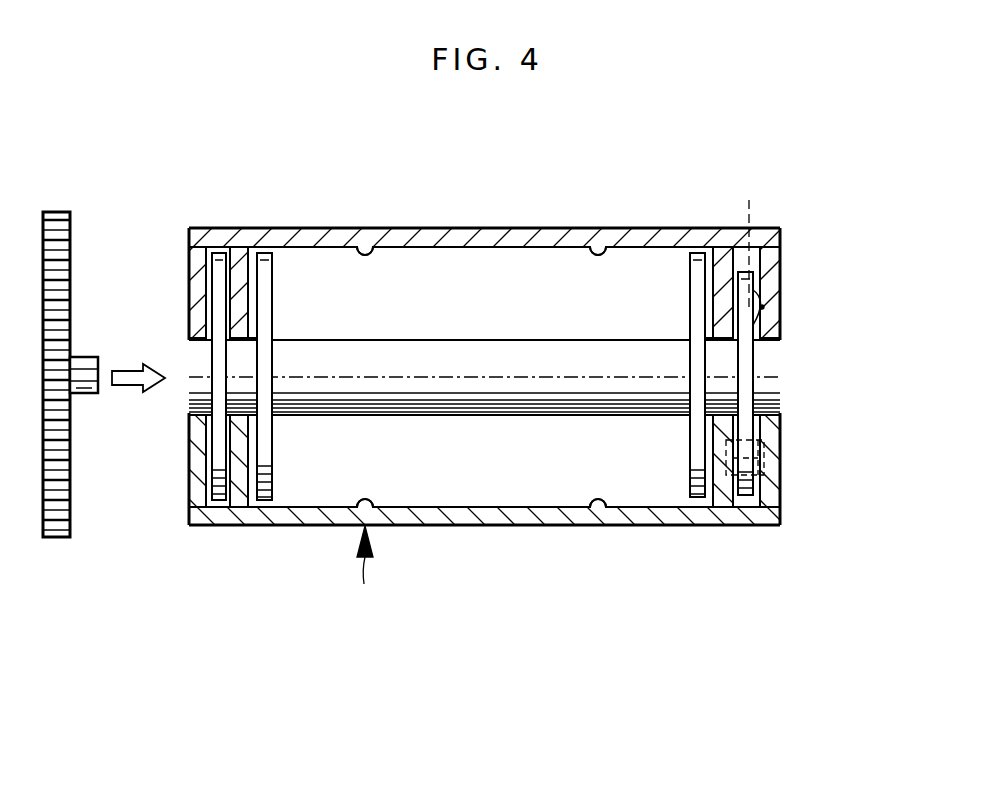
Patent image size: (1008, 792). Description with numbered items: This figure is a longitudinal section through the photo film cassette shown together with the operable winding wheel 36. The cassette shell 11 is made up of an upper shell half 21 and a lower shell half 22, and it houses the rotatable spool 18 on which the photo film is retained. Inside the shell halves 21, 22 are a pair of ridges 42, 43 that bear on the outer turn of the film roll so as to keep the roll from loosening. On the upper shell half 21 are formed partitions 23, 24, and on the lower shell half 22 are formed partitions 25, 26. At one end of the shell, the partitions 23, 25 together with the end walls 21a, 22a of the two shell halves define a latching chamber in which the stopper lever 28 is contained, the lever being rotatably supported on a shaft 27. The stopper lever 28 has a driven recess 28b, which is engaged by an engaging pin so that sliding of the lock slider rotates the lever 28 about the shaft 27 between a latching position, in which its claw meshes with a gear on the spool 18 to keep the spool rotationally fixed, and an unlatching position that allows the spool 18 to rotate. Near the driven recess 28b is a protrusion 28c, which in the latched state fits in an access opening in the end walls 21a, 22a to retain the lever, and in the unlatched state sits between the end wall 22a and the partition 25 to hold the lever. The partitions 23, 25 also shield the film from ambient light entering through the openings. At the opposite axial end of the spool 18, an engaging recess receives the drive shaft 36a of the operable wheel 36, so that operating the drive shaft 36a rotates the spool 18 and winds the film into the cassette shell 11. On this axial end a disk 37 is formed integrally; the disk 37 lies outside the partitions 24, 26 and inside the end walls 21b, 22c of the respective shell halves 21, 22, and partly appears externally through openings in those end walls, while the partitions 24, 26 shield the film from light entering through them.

The cassette shell 11 is at (362, 590).
The spool 18 is at (470, 403).
The upper shell half 21 is at (470, 228).
The end wall 21a is at (772, 306).
The end wall 21b is at (195, 300).
The lower shell half 22 is at (470, 527).
The end wall 22a is at (772, 433).
The end wall 22c is at (200, 432).
The partition 23 is at (698, 281).
The partition 24 is at (240, 298).
The partition 25 is at (712, 455).
The partition 26 is at (245, 463).
The shaft 27 is at (758, 461).
The stopper lever 28 is at (748, 508).
The driven recess 28b is at (762, 241).
The protrusion 28c is at (762, 308).
The operable wheel 36 is at (58, 538).
The drive shaft 36a is at (84, 394).
The disk 37 is at (222, 256).
The ridge 42 is at (599, 254).
The ridge 43 is at (365, 254).